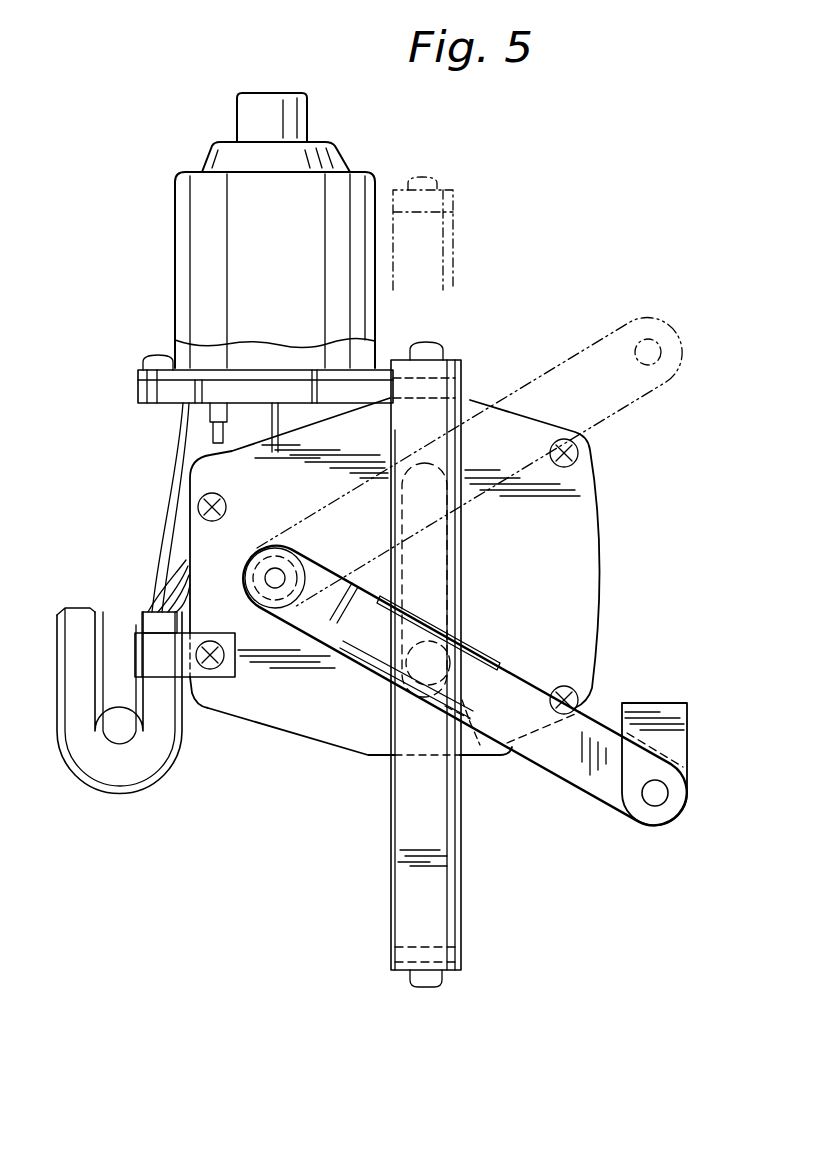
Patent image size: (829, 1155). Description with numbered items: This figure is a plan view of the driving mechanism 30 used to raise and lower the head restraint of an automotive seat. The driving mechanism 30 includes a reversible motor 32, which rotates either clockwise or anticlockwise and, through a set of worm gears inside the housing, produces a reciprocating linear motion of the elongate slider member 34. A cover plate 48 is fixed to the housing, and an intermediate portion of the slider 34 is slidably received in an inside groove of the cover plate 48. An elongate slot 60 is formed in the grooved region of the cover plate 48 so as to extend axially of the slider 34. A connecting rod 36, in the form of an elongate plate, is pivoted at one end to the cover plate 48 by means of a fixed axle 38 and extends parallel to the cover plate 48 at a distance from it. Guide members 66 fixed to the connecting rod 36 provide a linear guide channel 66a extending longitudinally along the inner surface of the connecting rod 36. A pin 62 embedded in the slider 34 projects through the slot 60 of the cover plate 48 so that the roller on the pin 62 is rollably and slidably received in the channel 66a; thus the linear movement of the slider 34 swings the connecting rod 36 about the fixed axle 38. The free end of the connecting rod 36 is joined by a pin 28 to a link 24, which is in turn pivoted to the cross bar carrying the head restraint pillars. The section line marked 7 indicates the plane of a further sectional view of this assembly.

The section line 7- 7 is at (150, 507).
The link 24 is at (683, 748).
The pin 28 is at (657, 806).
The driving mechanism 30 is at (520, 348).
The reversible motor 32 is at (176, 296).
The slider member 34 is at (461, 882).
The connecting rod 36 is at (549, 768).
The fixed axle 38 is at (276, 566).
The cover plate 48 is at (286, 716).
The elongate slot 60 is at (440, 566).
The pin 62 is at (462, 627).
The guide members 66 is at (497, 668).
The linear guide channel 66a is at (473, 680).